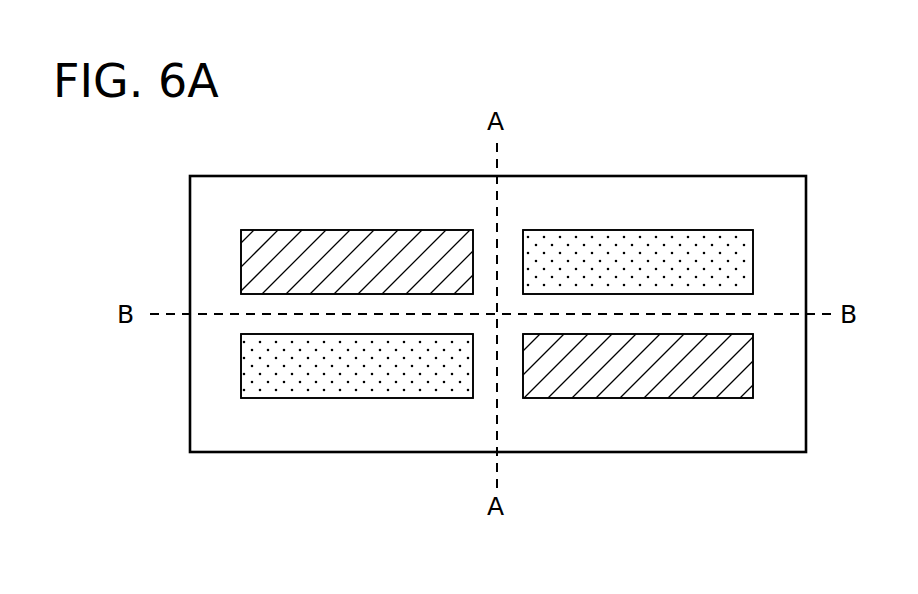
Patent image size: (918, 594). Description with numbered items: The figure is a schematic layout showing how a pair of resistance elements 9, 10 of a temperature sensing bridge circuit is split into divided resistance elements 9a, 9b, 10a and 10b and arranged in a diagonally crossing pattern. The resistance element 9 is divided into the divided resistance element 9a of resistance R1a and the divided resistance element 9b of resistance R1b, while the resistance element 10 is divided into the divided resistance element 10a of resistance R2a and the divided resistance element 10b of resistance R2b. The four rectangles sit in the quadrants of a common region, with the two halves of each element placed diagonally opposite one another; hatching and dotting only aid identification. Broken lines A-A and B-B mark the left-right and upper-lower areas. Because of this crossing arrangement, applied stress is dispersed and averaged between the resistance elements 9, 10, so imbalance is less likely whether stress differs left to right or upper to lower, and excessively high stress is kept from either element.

The divided resistance element 10a is at (300, 238).
The divided resistance element 10b is at (585, 358).
The resistance element 10 is at (519, 218).
The divided resistance element 9a is at (366, 378).
The divided resistance element 9b is at (653, 275).
The resistance element 9 is at (537, 396).